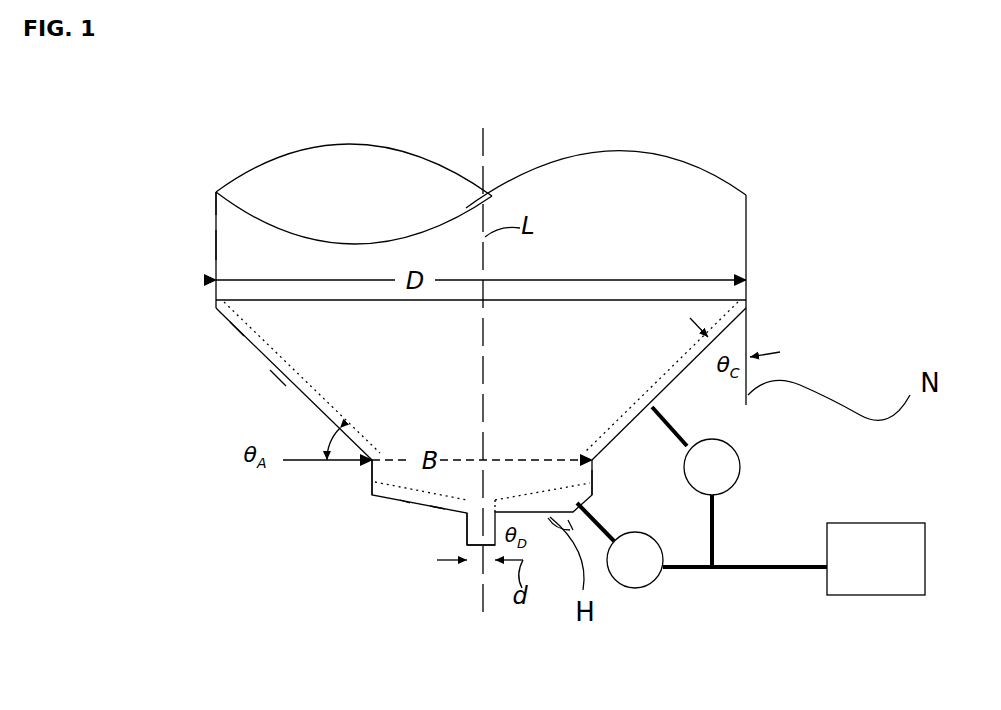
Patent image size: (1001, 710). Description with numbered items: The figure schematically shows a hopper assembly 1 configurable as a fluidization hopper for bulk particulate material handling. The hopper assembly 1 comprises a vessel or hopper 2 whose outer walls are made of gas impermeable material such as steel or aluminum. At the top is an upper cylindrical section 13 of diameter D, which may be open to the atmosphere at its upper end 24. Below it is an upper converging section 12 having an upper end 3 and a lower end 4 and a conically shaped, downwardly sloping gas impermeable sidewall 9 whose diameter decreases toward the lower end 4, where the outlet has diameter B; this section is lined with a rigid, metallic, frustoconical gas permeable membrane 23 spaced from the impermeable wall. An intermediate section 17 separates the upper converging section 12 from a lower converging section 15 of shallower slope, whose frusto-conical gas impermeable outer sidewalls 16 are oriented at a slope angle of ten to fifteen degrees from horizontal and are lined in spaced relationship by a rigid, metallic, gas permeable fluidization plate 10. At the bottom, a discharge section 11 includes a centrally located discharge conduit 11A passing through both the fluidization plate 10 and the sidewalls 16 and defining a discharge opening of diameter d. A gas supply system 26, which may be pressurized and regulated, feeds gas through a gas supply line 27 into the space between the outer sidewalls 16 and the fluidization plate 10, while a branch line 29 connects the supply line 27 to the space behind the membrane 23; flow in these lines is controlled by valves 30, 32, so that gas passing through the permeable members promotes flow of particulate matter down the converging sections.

The hopper assembly 1 is at (750, 160).
The vessel (hopper) 2 is at (748, 217).
The upper end 3 is at (762, 325).
The lower end 4 is at (233, 475).
The sloping sidewall 9 is at (278, 378).
The fluidization plate 10 is at (390, 497).
The discharge section 11 is at (465, 523).
The discharge conduit 11A is at (467, 538).
The upper converging section 12 is at (237, 328).
The upper cylindrical section 13 is at (216, 242).
The lower converging section 15 is at (408, 504).
The outer sidewalls 16 is at (437, 509).
The intermediate section 17 is at (593, 473).
The permeable membrane 23 is at (247, 348).
The upper end 24 is at (216, 210).
The gas supply system 26 is at (876, 559).
The gas supply line 27 is at (778, 567).
The branch line 29 is at (714, 512).
The valve 30 is at (740, 467).
The valve 32 is at (628, 590).